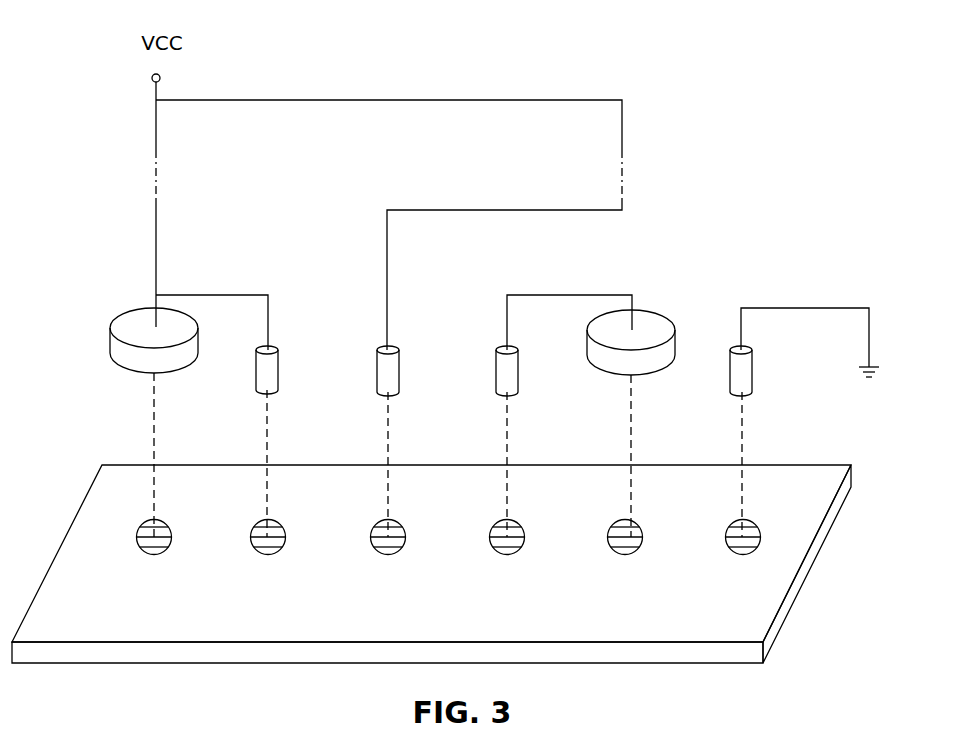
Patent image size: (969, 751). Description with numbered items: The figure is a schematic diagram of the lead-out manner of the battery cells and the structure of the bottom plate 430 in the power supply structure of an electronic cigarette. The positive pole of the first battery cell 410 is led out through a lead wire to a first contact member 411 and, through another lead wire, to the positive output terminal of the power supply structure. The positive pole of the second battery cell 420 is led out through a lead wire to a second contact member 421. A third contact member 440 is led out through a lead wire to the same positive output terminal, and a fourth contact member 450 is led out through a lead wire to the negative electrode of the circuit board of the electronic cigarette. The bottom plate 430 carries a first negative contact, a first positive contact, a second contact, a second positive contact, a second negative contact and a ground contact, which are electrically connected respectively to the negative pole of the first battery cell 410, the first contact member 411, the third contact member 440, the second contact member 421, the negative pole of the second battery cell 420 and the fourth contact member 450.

The first battery cell 410 is at (118, 326).
The first contact member 411 is at (279, 367).
The third contact member 440 is at (378, 355).
The second contact member 421 is at (496, 360).
The second battery cell 420 is at (660, 320).
The fourth contact member 450 is at (753, 368).
The bottom plate 430 is at (823, 475).